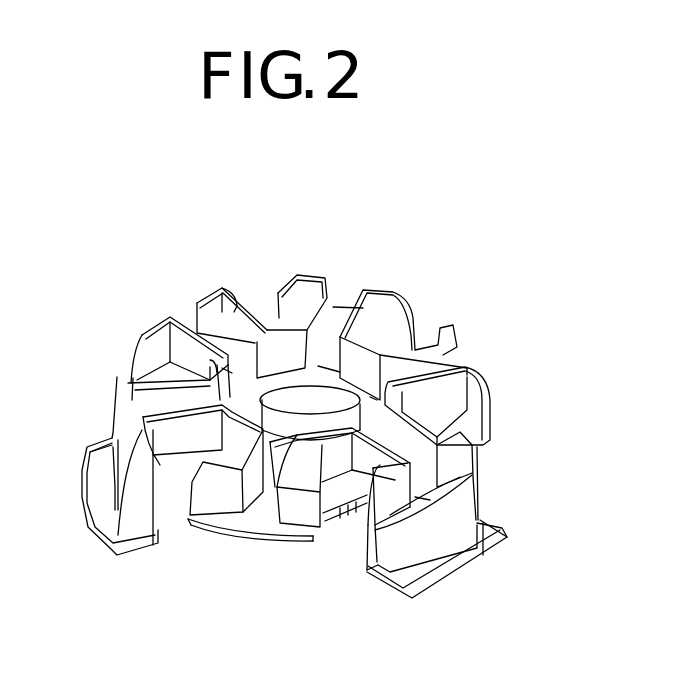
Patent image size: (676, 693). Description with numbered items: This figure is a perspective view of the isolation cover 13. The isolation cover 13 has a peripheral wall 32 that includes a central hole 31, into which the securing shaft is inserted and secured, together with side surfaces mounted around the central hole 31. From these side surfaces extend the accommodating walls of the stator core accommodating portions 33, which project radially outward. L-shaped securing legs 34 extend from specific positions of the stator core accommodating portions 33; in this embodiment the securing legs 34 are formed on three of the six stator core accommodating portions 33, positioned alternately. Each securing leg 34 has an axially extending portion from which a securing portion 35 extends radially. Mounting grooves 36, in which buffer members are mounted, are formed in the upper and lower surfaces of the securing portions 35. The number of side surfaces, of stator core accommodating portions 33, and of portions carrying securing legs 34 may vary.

The isolation cover 13 is at (412, 286).
The central hole 31 is at (288, 403).
The peripheral wall 32 is at (317, 467).
The stator core accommodating portion 33 is at (438, 397).
The securing leg 34 is at (453, 503).
The securing portion 35 is at (448, 580).
The mounting groove 36 is at (467, 553).